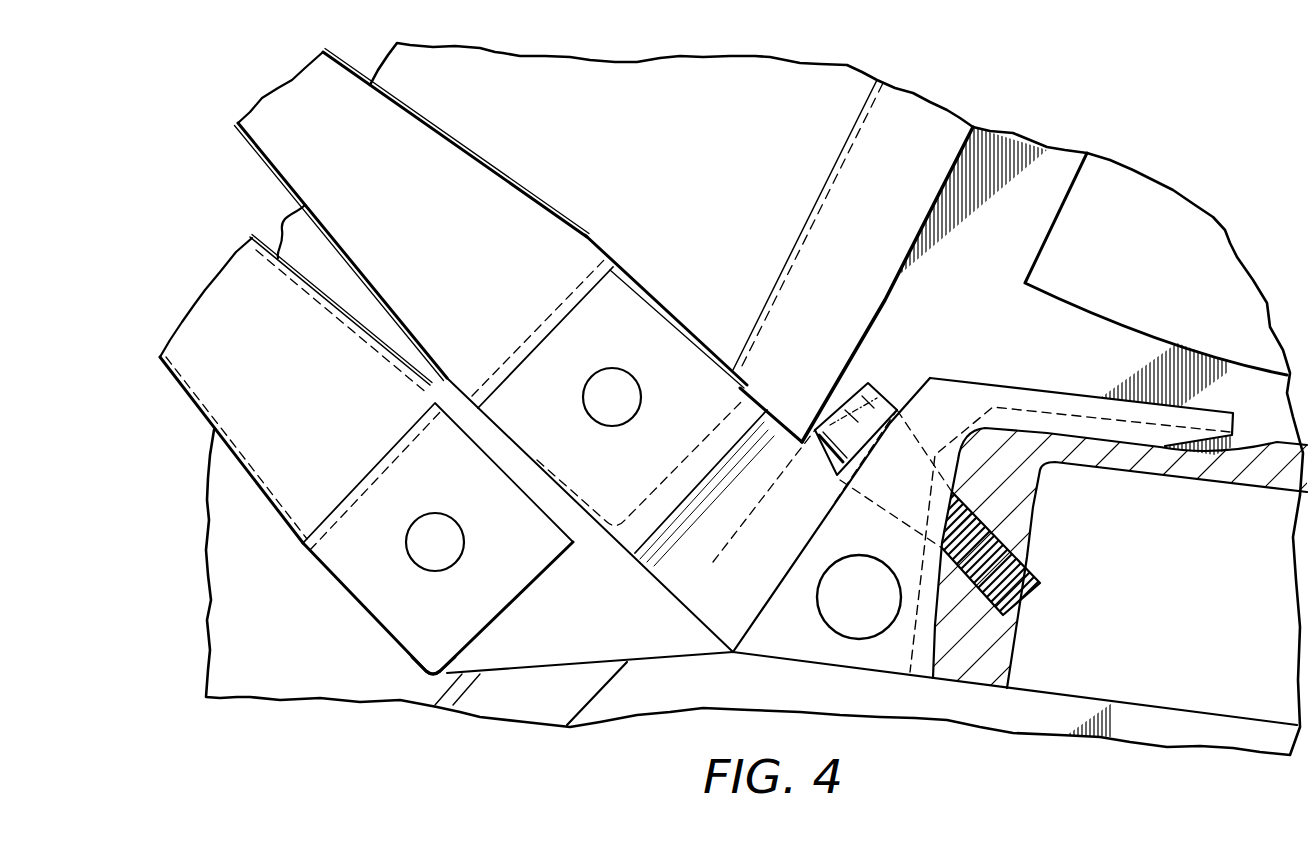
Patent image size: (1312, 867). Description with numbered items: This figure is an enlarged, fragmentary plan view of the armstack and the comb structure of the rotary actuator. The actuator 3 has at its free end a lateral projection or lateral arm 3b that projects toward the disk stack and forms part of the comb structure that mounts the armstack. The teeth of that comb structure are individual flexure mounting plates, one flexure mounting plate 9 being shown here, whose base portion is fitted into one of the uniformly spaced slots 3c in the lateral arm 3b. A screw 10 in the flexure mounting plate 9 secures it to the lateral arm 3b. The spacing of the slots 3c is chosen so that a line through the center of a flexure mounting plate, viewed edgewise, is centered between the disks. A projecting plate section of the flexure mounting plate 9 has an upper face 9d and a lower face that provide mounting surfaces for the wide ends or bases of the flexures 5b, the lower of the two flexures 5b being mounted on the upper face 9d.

The actuator 3 is at (1191, 534).
The lateral arm 3b is at (975, 656).
The slots 3c is at (1237, 440).
The flexures 5b is at (296, 163).
The flexure mounting plate 9 is at (598, 623).
The upper face 9d is at (437, 675).
The screw 10 is at (887, 402).